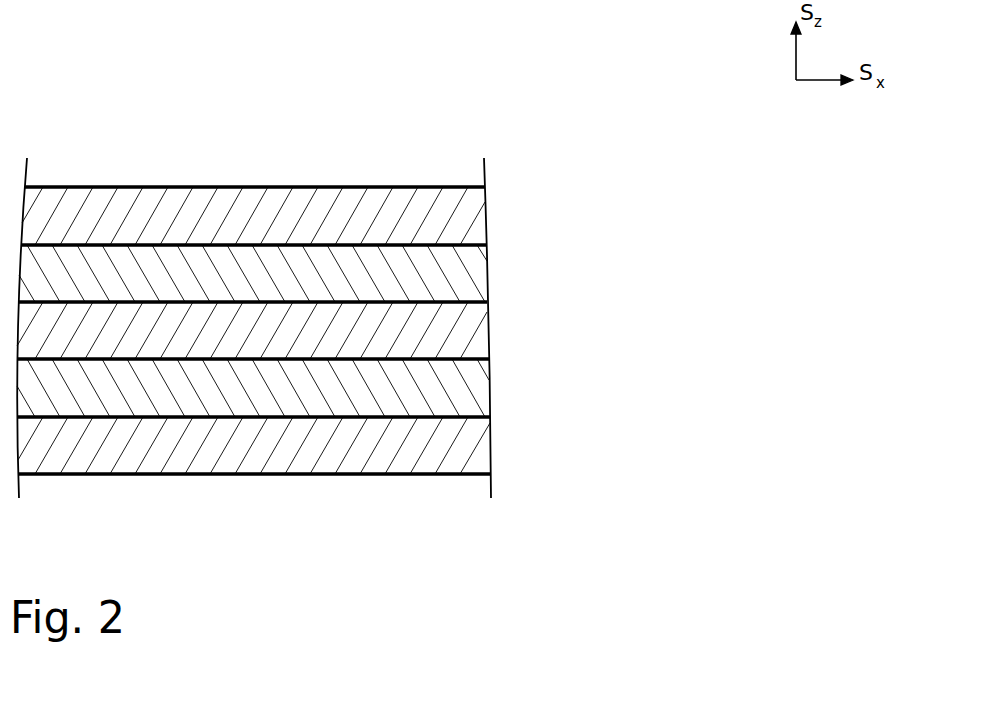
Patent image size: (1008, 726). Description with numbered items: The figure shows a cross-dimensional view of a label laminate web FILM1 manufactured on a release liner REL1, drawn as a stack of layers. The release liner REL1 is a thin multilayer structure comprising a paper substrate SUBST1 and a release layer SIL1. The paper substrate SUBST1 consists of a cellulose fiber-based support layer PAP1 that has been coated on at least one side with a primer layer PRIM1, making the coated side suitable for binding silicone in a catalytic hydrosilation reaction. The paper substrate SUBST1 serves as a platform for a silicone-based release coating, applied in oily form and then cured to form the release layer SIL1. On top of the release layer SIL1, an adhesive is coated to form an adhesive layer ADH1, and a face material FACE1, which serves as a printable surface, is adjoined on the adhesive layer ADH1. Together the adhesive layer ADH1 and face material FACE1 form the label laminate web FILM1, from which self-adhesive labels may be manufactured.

The face material FACE1 is at (518, 188).
The adhesive layer ADH1 is at (518, 245).
The label laminate web FILM1 is at (394, 245).
The release layer SIL1 is at (518, 302).
The primer layer PRIM1 is at (518, 359).
The cellulose fiber-based support layer PAP1 is at (518, 417).
The paper substrate SUBST1 is at (406, 417).
The release liner REL1 is at (470, 388).